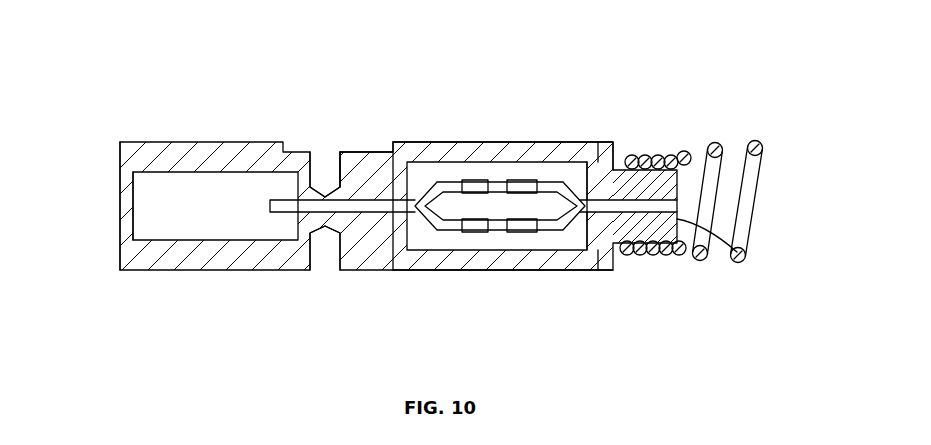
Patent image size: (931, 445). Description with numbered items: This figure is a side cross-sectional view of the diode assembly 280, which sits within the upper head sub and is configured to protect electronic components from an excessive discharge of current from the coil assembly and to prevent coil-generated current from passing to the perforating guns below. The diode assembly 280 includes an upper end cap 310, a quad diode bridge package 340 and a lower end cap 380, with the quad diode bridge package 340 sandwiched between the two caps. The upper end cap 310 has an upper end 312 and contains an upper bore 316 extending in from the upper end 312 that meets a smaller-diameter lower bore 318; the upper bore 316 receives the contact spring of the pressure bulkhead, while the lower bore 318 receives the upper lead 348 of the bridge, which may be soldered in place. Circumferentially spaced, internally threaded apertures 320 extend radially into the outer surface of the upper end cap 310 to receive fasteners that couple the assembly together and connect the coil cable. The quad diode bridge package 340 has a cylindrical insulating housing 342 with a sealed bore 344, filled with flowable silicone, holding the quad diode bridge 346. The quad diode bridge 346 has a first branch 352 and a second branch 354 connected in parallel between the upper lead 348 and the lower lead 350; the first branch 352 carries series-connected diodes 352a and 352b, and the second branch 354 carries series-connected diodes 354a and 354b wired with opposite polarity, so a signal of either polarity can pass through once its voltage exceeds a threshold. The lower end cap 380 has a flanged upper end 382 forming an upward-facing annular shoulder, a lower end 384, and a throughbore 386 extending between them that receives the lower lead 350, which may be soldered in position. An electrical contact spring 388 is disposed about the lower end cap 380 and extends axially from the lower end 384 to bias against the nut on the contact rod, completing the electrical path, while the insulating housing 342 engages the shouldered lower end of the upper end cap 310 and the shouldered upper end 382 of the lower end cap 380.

The diode assembly 280 is at (225, 38).
The upper end cap 310 is at (232, 152).
The upper end 312 is at (120, 150).
The upper bore 316 is at (140, 195).
The lower bore 318 is at (377, 192).
The internally threaded apertures 320 is at (325, 160).
The upper lead 348 is at (393, 213).
The quad diode bridge package 340 is at (435, 155).
The cylindrical insulating housing 342 is at (531, 153).
The sealed bore 344 is at (582, 172).
The lower lead 350 is at (615, 240).
The second branch 354 is at (440, 182).
The diode 354a is at (475, 182).
The diode 354b is at (522, 184).
The first branch 352 is at (452, 231).
The diode 352a is at (483, 228).
The diode 352b is at (518, 228).
The quad diode bridge 346 is at (540, 231).
The upper end 382 is at (613, 152).
The lower end cap 380 is at (652, 180).
The throughbore 386 is at (686, 157).
The electrical contact spring 388 is at (756, 147).
The lower end 384 is at (747, 253).